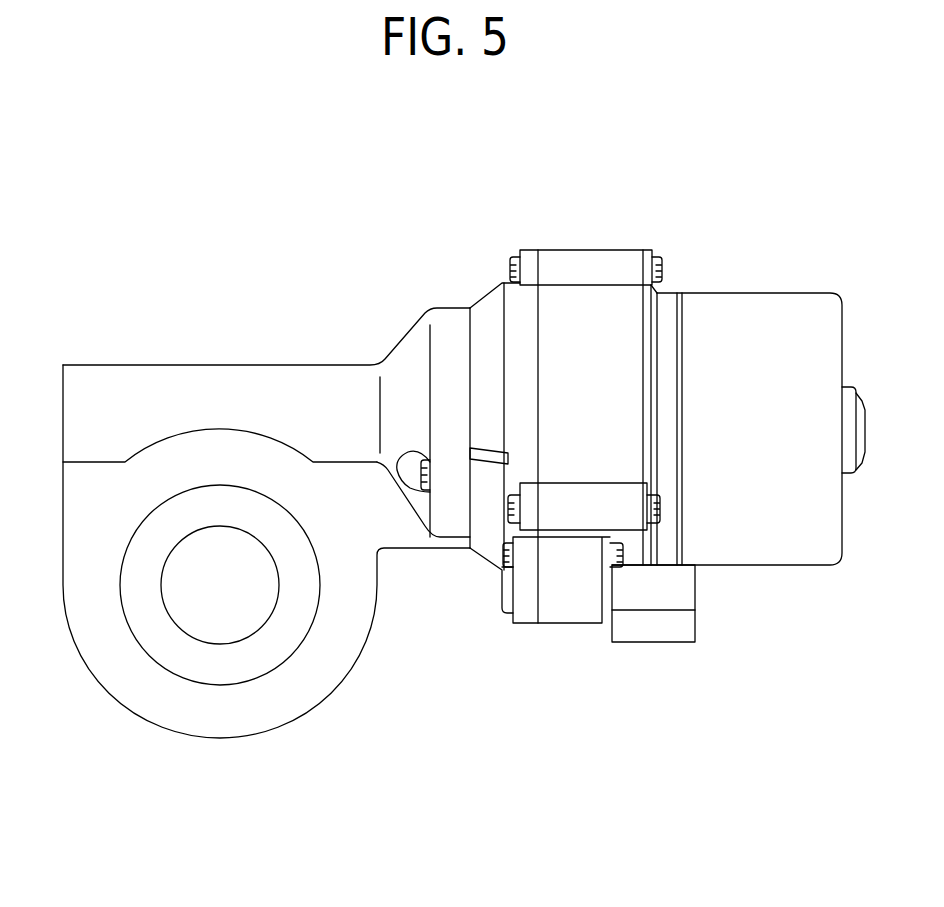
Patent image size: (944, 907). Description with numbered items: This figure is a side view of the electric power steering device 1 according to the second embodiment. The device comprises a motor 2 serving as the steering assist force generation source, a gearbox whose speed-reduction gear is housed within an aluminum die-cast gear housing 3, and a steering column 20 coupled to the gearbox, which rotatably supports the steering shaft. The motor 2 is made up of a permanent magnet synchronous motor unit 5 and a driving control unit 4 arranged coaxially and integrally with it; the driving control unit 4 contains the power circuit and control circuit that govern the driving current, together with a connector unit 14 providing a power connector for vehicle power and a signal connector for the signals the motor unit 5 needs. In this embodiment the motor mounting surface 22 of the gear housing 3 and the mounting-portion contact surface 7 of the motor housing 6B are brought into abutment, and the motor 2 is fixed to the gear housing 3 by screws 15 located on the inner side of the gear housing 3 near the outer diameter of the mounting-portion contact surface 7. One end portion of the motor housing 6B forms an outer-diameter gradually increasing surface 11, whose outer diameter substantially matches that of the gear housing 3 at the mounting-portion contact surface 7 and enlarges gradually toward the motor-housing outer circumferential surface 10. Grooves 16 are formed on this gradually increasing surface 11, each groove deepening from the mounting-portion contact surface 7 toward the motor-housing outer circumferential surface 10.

The electric power steering device 1 is at (462, 707).
The motor 2 is at (548, 697).
The gear housing 3 is at (457, 318).
The driving control unit 4 is at (583, 307).
The motor unit 5 is at (750, 308).
The motor housing 6B is at (562, 398).
The mounting-portion contact surface 7 is at (470, 518).
The motor-housing outer circumferential surface 10 is at (532, 313).
The outer-diameter gradually increasing surface 11 is at (476, 306).
The connector unit 14 is at (580, 613).
The screws 15 is at (422, 483).
The grooves 16 is at (488, 458).
The steering column 20 is at (219, 397).
The motor mounting surface 22 is at (470, 392).